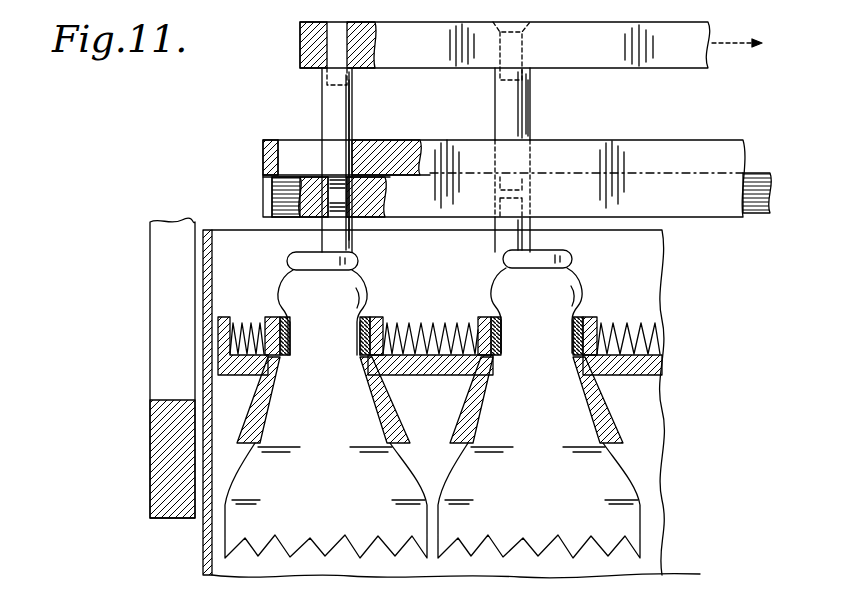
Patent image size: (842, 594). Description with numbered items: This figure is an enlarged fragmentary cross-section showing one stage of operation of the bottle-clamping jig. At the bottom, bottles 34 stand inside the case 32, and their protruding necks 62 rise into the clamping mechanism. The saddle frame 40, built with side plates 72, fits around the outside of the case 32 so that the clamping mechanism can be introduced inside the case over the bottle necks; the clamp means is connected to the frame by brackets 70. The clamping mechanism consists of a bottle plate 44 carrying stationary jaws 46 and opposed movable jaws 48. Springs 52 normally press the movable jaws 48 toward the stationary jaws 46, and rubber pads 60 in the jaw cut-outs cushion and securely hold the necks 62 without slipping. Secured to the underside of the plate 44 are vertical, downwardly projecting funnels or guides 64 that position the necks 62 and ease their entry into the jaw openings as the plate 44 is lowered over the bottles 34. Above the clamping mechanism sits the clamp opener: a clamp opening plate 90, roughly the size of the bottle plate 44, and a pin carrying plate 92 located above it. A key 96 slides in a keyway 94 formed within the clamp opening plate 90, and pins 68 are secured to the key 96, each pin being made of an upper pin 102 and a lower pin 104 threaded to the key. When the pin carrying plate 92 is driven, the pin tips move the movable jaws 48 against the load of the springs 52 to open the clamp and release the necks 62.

The case 32 is at (203, 544).
The bottle 34 is at (324, 502).
The saddle frame 40 is at (150, 385).
The bottle plate 44 is at (668, 362).
The stationary jaw 46 is at (367, 320).
The movable jaw 48 is at (270, 320).
The spring 52 is at (240, 326).
The rubber pad 60 is at (356, 336).
The bottle neck 62 is at (364, 300).
The funnel or guide 64 is at (403, 427).
The pin 68 is at (321, 101).
The bracket 70 is at (292, 141).
The side plate 72 is at (150, 465).
The clamp opening plate 90 is at (266, 150).
The pin carrying plate 92 is at (436, 32).
The keyway 94 is at (263, 186).
The key 96 is at (285, 200).
The upper pin 102 is at (353, 120).
The lower pin 104 is at (330, 238).